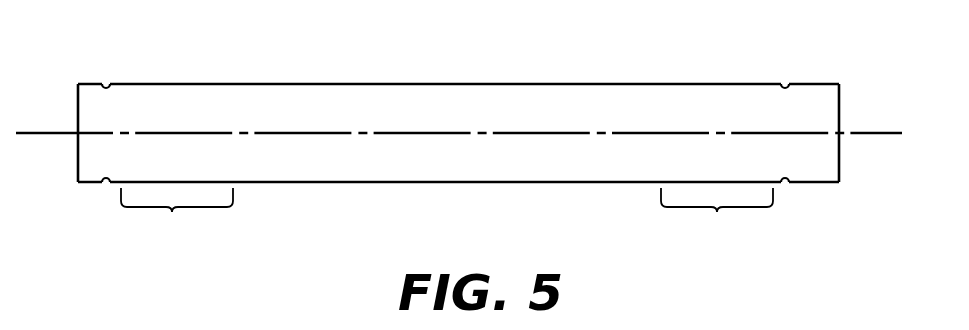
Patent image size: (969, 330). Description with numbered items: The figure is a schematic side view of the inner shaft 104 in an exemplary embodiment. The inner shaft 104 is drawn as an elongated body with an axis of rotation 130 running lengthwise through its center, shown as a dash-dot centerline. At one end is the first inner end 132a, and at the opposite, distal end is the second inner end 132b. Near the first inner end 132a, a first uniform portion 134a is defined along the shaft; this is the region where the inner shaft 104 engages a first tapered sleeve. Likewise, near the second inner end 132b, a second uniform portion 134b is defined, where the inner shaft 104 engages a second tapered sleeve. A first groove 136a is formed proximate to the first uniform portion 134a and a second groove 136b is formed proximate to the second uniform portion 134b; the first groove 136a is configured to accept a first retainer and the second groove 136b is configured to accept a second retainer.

The inner shaft 104 is at (438, 84).
The axis of rotation 130 is at (864, 133).
The first inner end 132a is at (840, 152).
The second inner end 132b is at (78, 152).
The first uniform portion 134a is at (717, 212).
The second uniform portion 134b is at (172, 212).
The first groove 136a is at (786, 86).
The second groove 136b is at (106, 86).